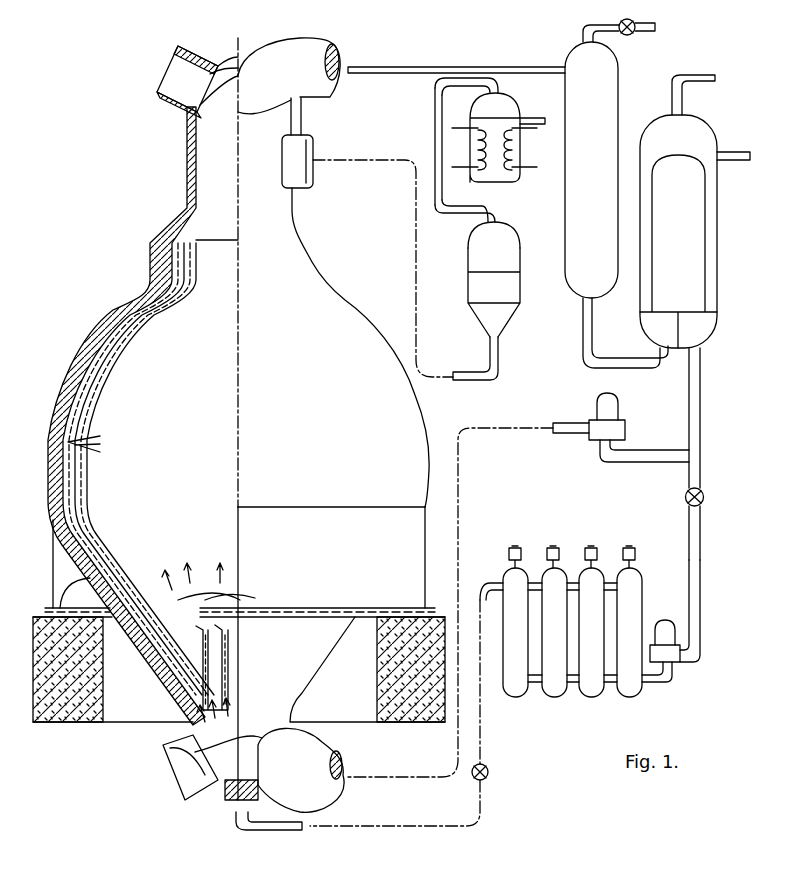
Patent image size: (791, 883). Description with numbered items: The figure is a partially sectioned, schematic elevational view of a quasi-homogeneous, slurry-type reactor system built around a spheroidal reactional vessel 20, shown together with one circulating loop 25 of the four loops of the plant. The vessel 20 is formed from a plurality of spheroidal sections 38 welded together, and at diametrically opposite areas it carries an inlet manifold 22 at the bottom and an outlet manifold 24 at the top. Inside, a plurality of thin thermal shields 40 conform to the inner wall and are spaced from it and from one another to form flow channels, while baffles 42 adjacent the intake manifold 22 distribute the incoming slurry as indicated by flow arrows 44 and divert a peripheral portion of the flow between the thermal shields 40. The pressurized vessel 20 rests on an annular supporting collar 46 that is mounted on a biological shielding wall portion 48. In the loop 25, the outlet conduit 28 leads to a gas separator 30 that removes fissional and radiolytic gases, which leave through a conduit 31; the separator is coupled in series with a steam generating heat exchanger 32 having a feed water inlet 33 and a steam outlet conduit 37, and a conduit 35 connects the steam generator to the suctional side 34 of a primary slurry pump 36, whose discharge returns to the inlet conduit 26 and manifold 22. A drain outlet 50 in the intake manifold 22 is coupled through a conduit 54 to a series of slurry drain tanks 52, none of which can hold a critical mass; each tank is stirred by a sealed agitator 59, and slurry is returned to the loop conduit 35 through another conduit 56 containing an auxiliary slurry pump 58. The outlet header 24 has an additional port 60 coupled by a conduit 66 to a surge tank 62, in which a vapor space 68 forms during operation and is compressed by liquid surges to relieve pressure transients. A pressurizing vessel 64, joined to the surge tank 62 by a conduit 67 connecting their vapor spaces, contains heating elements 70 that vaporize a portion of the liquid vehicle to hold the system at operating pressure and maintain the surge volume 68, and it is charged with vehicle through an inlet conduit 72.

The reactional vessel 20 is at (345, 300).
The inlet manifold 22 is at (190, 740).
The outlet manifold 24 is at (186, 178).
The circulating loop 25 is at (547, 59).
The inlet conduit 26 is at (460, 517).
The outlet conduit 28 is at (185, 46).
The gas separator 30 is at (601, 112).
The conduit 31 is at (575, 27).
The steam generating heat exchanger 32 is at (718, 199).
The feed water inlet 33 is at (735, 152).
The suctional side 34 is at (615, 445).
The conduit 35 is at (702, 365).
The primary slurry pump 36 is at (597, 405).
The steam outlet conduit 37 is at (690, 70).
The spheroidal sections 38 is at (120, 296).
The thermal shields 40 is at (84, 443).
The baffles 42 is at (216, 657).
The flow arrows 44 is at (240, 603).
The annular supporting collar 46 is at (52, 555).
The biological shielding wall portion 48 is at (103, 690).
The drain outlet 50 is at (226, 798).
The slurry drain tanks 52 is at (530, 624).
The conduit 54 is at (272, 832).
The conduit 56 is at (701, 555).
The auxiliary slurry pump 58 is at (665, 620).
The agitators and stirrers 59 is at (553, 548).
The additional port 60 is at (297, 128).
The surge tank 62 is at (522, 265).
The pressurizing vessel 64 is at (522, 142).
The conduit 66 is at (500, 366).
The conduit 67 is at (446, 198).
The vapor space 68 is at (480, 236).
The heating elements 70 is at (462, 128).
The inlet conduit 72 is at (535, 118).